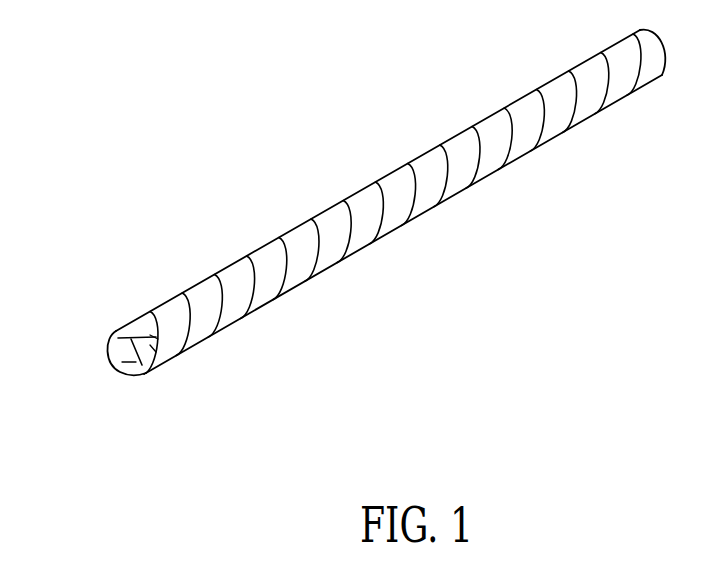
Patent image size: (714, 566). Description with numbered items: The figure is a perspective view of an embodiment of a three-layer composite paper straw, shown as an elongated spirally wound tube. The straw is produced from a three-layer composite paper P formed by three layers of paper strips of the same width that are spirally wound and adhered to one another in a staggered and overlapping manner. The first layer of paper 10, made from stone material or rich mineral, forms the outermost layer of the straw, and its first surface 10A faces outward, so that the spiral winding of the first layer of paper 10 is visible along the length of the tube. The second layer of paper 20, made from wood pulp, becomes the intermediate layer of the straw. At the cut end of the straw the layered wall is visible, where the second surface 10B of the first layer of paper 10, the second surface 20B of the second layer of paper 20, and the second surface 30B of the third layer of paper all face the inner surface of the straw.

The three-layer composite paper P is at (356, 204).
The first layer of paper 10 is at (112, 348).
The first surface of the first layer of paper 10A is at (240, 270).
The second surface of the first layer of paper 10B is at (135, 363).
The second layer of paper 20 is at (126, 356).
The second surface of the second layer of paper 20B is at (157, 342).
The second surface of the third layer of paper 30B is at (157, 339).